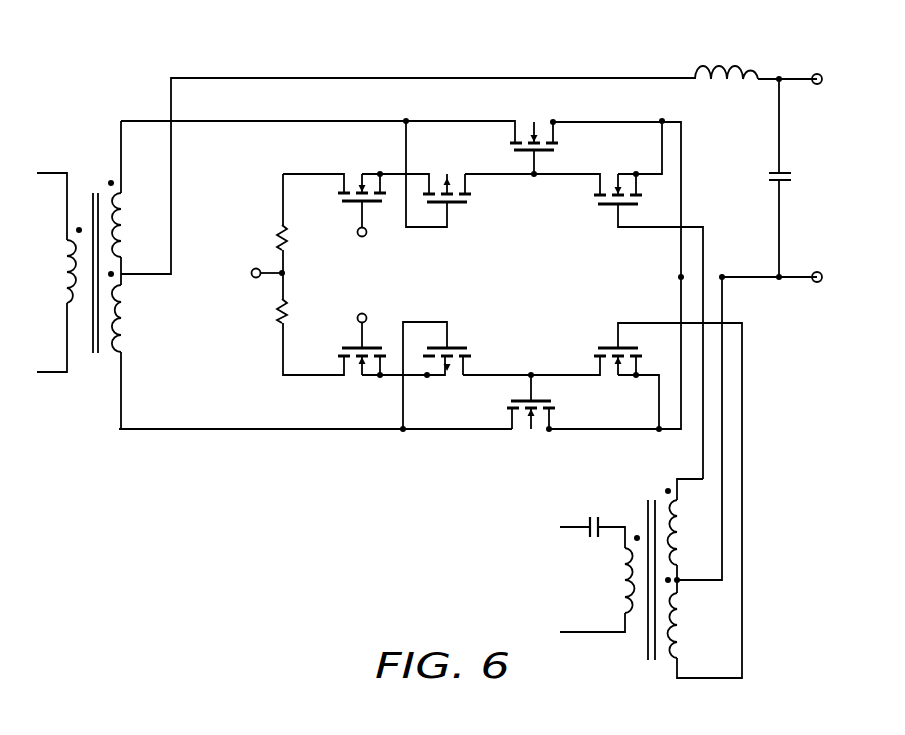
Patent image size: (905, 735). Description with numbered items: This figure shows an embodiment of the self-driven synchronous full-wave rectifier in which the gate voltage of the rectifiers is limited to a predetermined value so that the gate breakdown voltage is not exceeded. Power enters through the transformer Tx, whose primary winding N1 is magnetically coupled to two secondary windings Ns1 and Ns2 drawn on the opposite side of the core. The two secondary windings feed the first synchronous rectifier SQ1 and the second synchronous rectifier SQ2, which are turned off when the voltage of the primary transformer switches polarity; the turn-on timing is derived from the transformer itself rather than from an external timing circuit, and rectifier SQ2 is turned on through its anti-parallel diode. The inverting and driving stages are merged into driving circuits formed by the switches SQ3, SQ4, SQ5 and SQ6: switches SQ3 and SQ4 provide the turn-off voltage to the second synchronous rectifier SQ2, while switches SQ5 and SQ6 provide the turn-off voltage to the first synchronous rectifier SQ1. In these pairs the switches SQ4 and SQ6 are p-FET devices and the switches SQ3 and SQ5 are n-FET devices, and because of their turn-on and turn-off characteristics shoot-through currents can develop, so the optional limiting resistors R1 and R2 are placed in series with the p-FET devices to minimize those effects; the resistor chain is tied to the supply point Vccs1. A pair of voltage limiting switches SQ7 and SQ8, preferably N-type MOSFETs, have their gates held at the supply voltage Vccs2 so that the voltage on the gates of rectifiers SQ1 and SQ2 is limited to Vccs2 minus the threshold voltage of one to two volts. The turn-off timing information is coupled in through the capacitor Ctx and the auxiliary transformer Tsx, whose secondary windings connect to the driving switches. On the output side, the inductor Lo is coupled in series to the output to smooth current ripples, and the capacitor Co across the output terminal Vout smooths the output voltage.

The main transformer Tx is at (95, 253).
The primary winding of Tx N1 is at (63, 271).
The first secondary winding of Tx Ns1 is at (132, 225).
The second secondary winding of Tx Ns2 is at (132, 318).
The limiting resistor R1 is at (294, 238).
The limiting resistor R2 is at (294, 313).
The control supply voltage terminal Vccs1 is at (238, 276).
The gate supply voltage Vccs2 is at (362, 274).
The first synchronous rectifier SQ1 is at (531, 429).
The second synchronous rectifier SQ2 is at (534, 123).
The switch SQ3 is at (618, 177).
The switch SQ4 is at (447, 175).
The switch SQ5 is at (618, 375).
The switch SQ6 is at (447, 375).
The voltage limiting switch SQ7 is at (362, 175).
The voltage limiting switch SQ8 is at (362, 375).
The inductor Lo is at (726, 60).
The capacitor Co is at (767, 176).
The output voltage terminals Vout is at (841, 176).
The coupling capacitor of auxiliary transformer Ctx is at (594, 515).
The auxiliary (drive) transformer Tsx is at (651, 561).